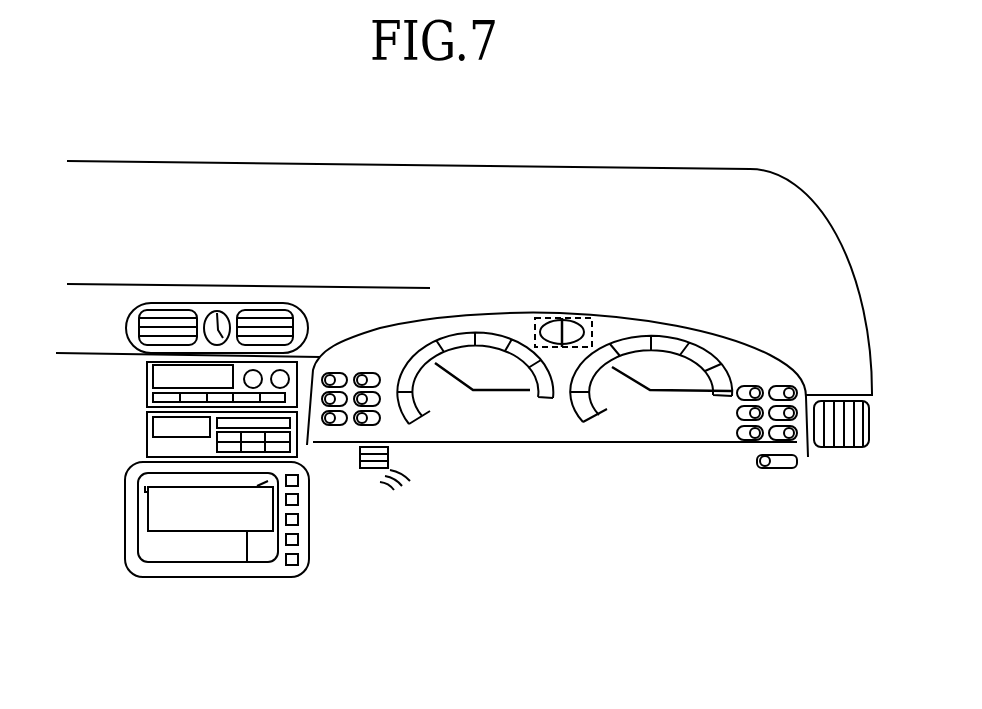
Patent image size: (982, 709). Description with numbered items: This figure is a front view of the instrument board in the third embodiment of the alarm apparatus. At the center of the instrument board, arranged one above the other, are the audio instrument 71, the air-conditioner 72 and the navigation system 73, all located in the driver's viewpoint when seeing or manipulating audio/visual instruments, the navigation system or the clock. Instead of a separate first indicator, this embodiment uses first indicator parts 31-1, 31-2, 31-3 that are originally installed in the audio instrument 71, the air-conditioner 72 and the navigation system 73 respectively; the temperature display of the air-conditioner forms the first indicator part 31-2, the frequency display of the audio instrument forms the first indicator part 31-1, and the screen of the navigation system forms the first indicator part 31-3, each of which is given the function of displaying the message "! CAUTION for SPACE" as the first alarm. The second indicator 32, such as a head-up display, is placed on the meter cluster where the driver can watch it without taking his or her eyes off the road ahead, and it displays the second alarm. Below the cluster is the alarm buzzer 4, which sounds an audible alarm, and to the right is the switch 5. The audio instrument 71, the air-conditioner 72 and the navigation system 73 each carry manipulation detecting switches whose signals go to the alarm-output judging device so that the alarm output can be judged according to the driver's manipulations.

The first indicator part 31-1 is at (158, 438).
The first indicator part 31-2 is at (148, 372).
The first indicator part 31-3 is at (147, 510).
The second indicator 32 is at (558, 317).
The alarm buzzer 4 is at (367, 468).
The switch 5 is at (797, 465).
The audio instrument 71 is at (167, 448).
The air-conditioner 72 is at (173, 389).
The navigation system 73 is at (209, 521).